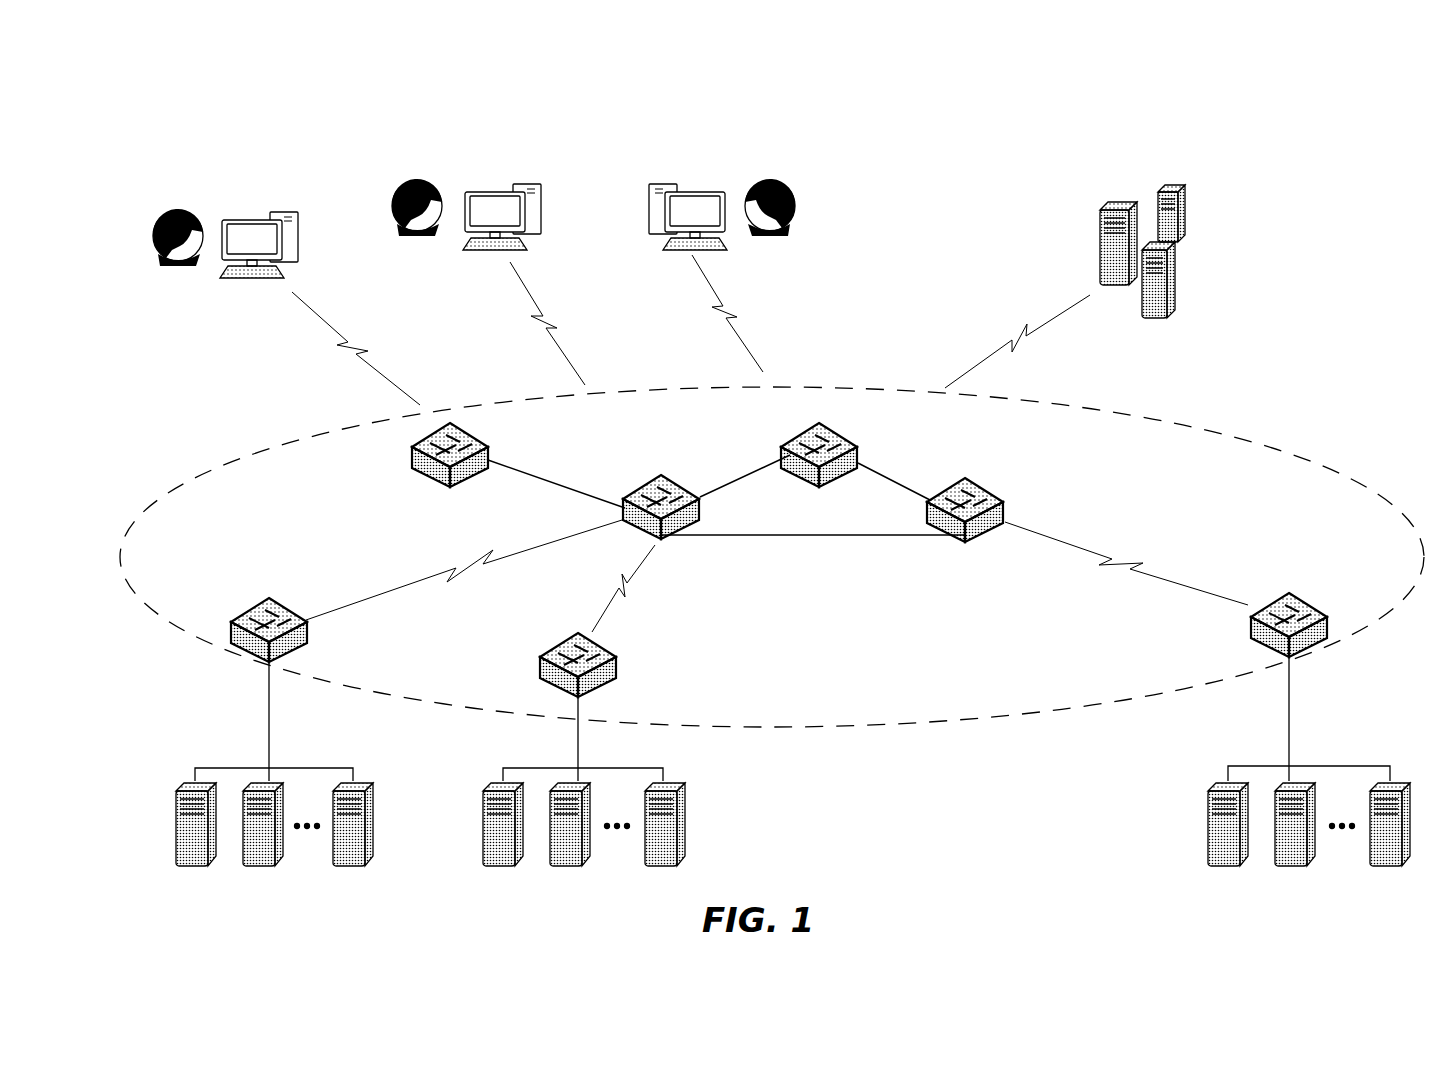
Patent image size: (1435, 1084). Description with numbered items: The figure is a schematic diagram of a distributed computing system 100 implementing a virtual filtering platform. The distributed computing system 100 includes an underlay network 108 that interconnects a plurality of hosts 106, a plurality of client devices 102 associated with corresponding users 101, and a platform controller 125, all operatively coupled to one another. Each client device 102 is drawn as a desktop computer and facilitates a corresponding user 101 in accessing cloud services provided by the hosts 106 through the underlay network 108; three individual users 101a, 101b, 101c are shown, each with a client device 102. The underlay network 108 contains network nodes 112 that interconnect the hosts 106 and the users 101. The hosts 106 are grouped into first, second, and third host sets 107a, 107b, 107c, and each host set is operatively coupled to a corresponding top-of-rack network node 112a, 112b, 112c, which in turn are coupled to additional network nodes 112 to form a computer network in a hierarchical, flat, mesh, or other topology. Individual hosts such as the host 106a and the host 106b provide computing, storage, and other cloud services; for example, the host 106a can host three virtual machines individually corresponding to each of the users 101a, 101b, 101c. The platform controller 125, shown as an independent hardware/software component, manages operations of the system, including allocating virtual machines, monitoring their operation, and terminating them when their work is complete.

The distributed computing system 100 is at (1280, 150).
The users 101 is at (473, 202).
The user 101a is at (122, 208).
The user 101b is at (362, 178).
The user 101c is at (826, 178).
The client device 102 is at (270, 214).
The host 106 is at (350, 790).
The host 106a is at (184, 790).
The host 106b is at (665, 790).
The first host set 107a is at (220, 777).
The second host set 107b is at (571, 795).
The third host set 107c is at (1362, 730).
The underlay network 108 is at (772, 557).
The network node 112 is at (425, 440).
The top-of-rack network node 112a is at (256, 612).
The top-of-rack network node 112b is at (563, 648).
The top-of-rack network node 112c is at (1308, 605).
The platform controller 125 is at (1136, 279).